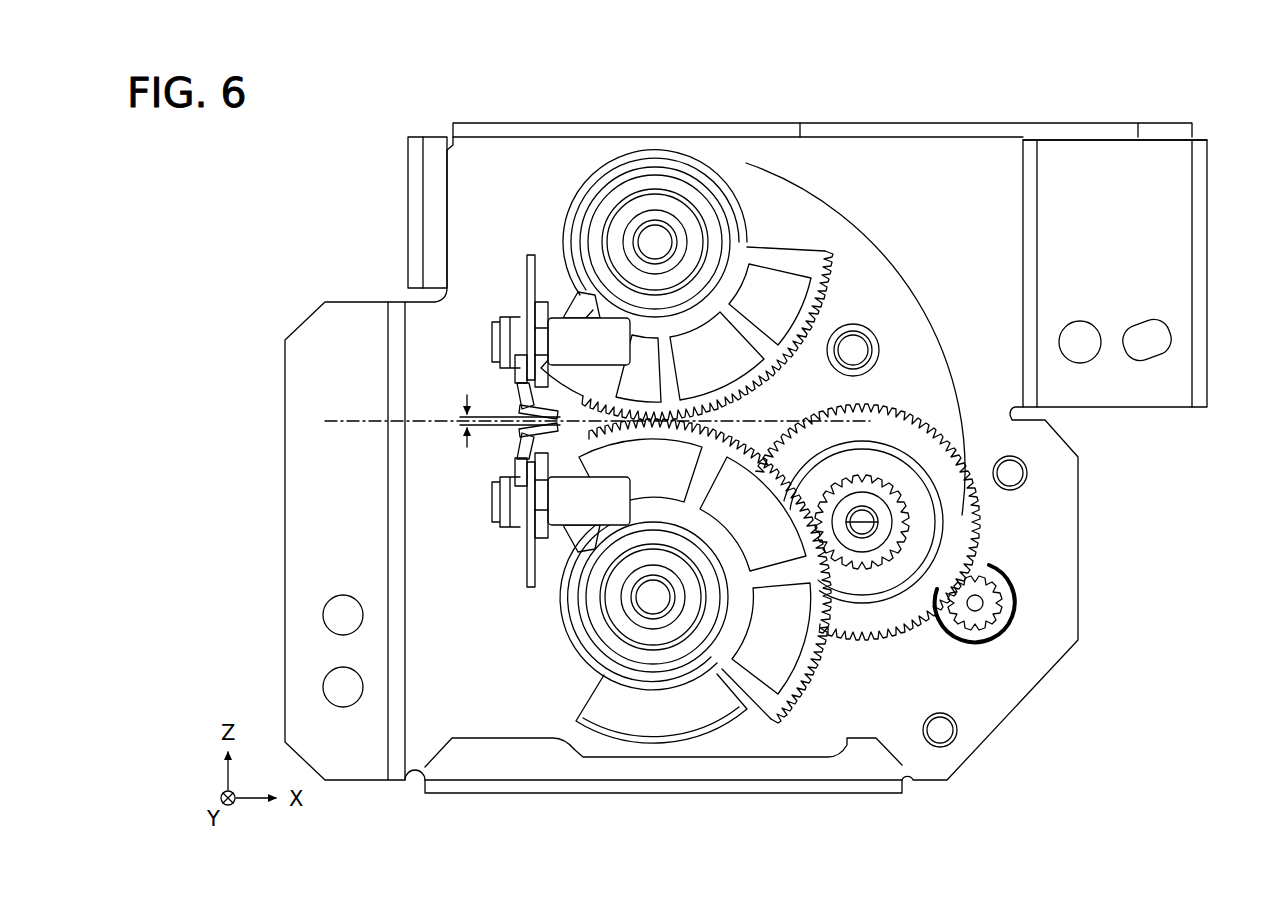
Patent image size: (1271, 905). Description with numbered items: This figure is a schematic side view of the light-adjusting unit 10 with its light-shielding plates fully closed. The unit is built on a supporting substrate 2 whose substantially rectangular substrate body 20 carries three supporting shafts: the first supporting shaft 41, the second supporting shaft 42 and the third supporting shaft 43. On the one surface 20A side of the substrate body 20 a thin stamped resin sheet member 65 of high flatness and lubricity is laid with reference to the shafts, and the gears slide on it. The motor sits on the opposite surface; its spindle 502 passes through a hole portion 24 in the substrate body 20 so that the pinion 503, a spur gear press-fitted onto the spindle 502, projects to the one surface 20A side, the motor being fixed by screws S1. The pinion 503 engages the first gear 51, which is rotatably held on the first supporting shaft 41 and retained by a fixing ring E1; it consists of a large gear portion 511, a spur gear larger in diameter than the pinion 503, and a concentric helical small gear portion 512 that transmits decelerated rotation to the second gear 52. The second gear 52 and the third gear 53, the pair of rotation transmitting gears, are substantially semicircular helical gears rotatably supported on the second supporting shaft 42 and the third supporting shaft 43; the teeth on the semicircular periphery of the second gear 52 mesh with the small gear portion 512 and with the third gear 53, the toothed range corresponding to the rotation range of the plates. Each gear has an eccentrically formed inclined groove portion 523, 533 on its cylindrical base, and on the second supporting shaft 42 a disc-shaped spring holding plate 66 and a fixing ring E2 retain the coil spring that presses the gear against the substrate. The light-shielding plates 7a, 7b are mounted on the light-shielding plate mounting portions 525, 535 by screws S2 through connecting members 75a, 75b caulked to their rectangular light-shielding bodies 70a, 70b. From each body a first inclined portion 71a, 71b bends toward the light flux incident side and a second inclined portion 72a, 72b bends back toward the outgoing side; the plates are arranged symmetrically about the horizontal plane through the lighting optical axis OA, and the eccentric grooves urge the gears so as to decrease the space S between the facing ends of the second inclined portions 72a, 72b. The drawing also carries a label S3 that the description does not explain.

The supporting substrate 2 is at (1062, 117).
The light-adjusting unit 10 is at (1220, 117).
The substrate body 20 is at (918, 155).
The one surface 20A is at (842, 152).
The hole portion 24 is at (1018, 598).
The first supporting shaft 41 is at (878, 516).
The second supporting shaft 42 is at (645, 600).
The third supporting shaft 43 is at (650, 238).
The first gear 51 is at (886, 512).
The second gear 52 is at (689, 632).
The third gear 53 is at (733, 242).
The sheet member 65 is at (912, 302).
The spring holding plate 66 is at (687, 222).
The light-shielding plate 7a is at (486, 528).
The light-shielding plate 7b is at (486, 373).
The light-shielding body 70a is at (527, 565).
The light-shielding body 70b is at (527, 265).
The first inclined portion 71a is at (520, 470).
The first inclined portion 71b is at (518, 370).
The second inclined portion 72a is at (520, 440).
The second inclined portion 72b is at (535, 400).
The connecting member 75a is at (540, 500).
The connecting member 75b is at (540, 310).
The spindle 502 is at (970, 618).
The pinion 503 is at (990, 588).
The large gear portion 511 is at (902, 428).
The small gear portion 512 is at (873, 477).
The groove portion 523 is at (655, 650).
The light-shielding plate mounting portion 525 is at (594, 490).
The groove portion 533 is at (677, 200).
The light-shielding plate mounting portion 535 is at (579, 343).
The fixing ring E1 is at (866, 540).
The fixing ring E2 is at (680, 247).
The lighting optical axis OA is at (352, 425).
The space S is at (502, 420).
The screws S1 is at (1013, 470).
The screw S2 is at (492, 333).
The screw hole S3 is at (853, 340).